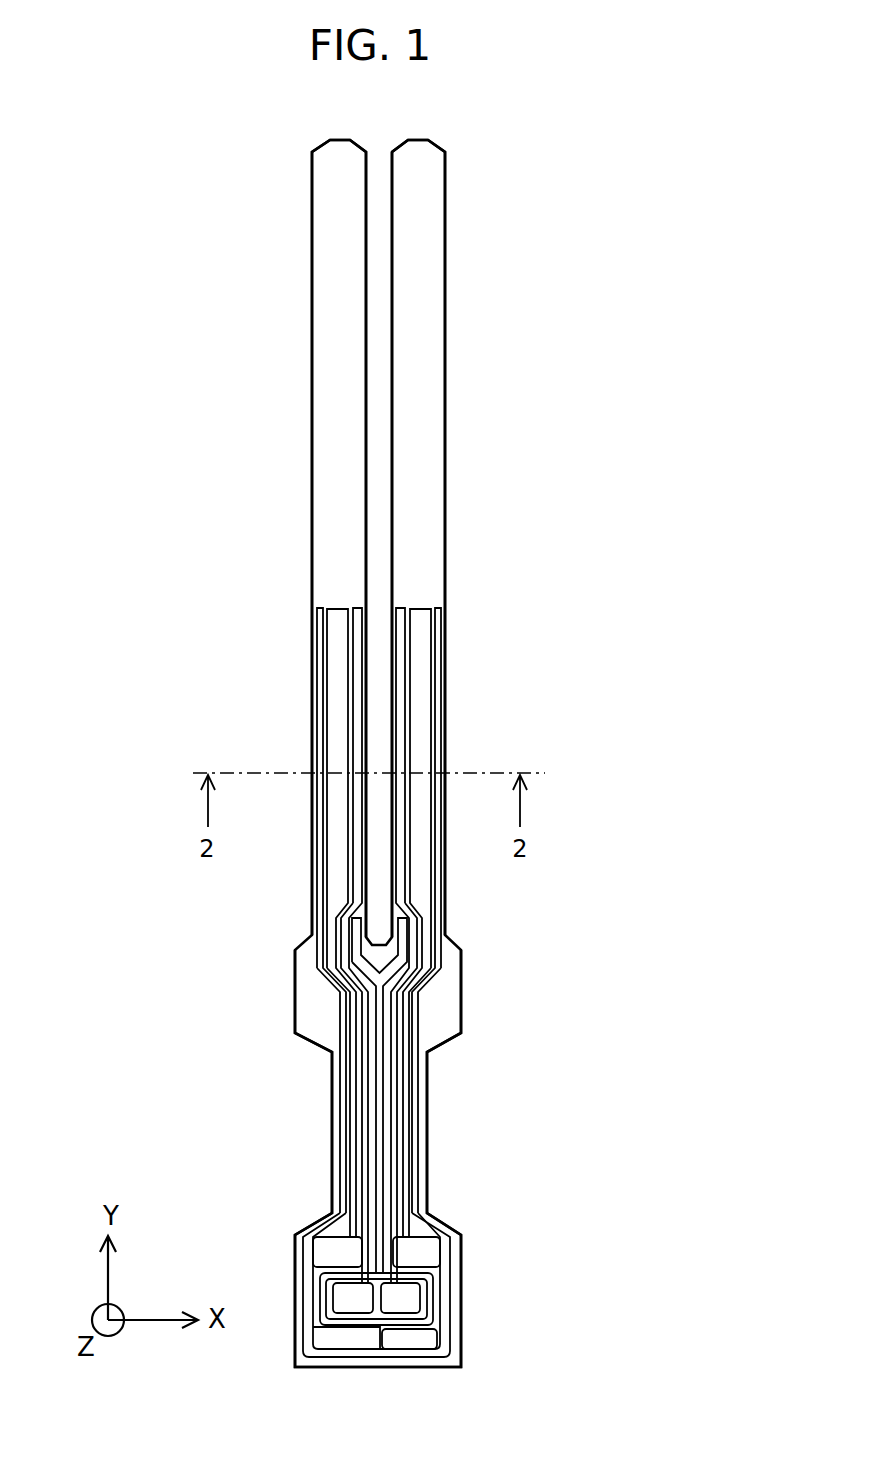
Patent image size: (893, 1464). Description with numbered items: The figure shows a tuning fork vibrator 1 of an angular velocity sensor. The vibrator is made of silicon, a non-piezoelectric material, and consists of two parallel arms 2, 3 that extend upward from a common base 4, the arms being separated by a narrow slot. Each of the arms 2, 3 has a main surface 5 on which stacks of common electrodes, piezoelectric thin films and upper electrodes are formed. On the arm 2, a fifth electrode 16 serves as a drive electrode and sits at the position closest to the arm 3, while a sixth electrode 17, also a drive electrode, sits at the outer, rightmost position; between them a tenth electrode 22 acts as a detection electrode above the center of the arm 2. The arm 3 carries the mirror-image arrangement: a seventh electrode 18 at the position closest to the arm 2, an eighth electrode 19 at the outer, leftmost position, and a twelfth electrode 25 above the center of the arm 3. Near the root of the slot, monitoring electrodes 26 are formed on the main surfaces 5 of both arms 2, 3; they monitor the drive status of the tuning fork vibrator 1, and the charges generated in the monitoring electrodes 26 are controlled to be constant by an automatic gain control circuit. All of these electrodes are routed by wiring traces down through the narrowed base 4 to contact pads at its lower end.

The tuning fork vibrator 1 is at (467, 200).
The arm 2 is at (447, 300).
The arm 3 is at (312, 293).
The base 4 is at (448, 1020).
The main surface 5 is at (333, 432).
The fifth electrode 16 is at (400, 628).
The sixth electrode 17 is at (435, 738).
The seventh electrode 18 is at (357, 640).
The eighth electrode 19 is at (320, 742).
The tenth electrode 22 is at (417, 688).
The twelfth electrode 25 is at (335, 685).
The monitoring electrodes 26 is at (355, 948).